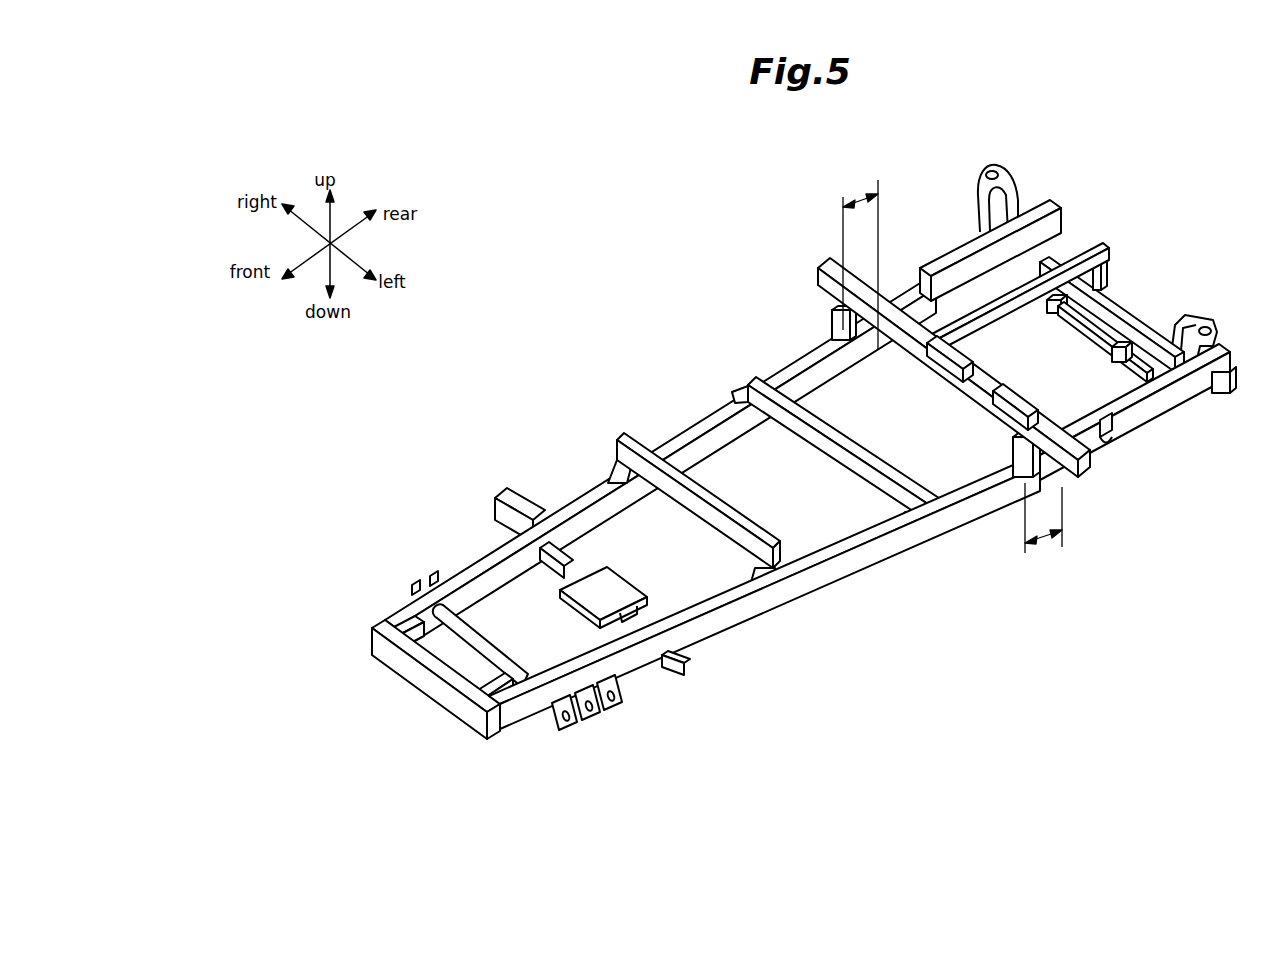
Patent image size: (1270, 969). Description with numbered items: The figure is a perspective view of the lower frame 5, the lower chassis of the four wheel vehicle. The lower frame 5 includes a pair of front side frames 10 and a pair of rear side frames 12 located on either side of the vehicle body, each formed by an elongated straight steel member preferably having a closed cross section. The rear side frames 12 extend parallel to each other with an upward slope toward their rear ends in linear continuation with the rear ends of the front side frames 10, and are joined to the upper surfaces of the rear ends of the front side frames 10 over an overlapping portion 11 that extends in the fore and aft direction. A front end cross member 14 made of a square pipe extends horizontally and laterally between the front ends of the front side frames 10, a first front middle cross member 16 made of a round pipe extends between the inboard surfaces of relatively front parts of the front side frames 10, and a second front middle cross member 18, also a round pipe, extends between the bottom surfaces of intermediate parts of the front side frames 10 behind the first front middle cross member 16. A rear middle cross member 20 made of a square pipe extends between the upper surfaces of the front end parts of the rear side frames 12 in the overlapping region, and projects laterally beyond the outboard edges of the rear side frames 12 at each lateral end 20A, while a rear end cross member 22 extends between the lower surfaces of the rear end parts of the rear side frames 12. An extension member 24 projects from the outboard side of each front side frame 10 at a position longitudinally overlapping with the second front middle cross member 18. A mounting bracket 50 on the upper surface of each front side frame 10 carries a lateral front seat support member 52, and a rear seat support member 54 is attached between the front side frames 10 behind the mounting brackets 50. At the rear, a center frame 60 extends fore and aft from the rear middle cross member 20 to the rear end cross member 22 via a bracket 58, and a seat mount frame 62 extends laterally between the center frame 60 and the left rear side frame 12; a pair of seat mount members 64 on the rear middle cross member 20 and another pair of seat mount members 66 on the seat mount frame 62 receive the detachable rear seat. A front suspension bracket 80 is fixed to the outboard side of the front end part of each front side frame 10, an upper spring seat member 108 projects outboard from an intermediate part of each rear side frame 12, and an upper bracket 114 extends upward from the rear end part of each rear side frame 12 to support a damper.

The lower frame 5 is at (750, 422).
The front side frame 10 is at (572, 500).
The overlapping portion 11 is at (857, 197).
The rear side frame 12 is at (953, 253).
The front end cross member 14 is at (418, 682).
The first front middle cross member 16 is at (485, 643).
The second front middle cross member 18 is at (565, 565).
The rear middle cross member 20 is at (912, 330).
The lateral end 20A is at (828, 258).
The rear end cross member 22 is at (1162, 328).
The extension member 24 is at (493, 496).
The mounting bracket 50 is at (777, 580).
The front seat support member 52 is at (720, 507).
The rear seat support member 54 is at (813, 427).
The bracket 58 is at (1107, 275).
The center frame 60 is at (1085, 262).
The seat mount frame 62 is at (1062, 300).
The seat mount member 64 is at (1000, 383).
The seat mount member 66 is at (1125, 328).
The front suspension bracket 80 is at (628, 690).
The upper spring seat member 108 is at (1110, 432).
The upper bracket 114 is at (1003, 185).